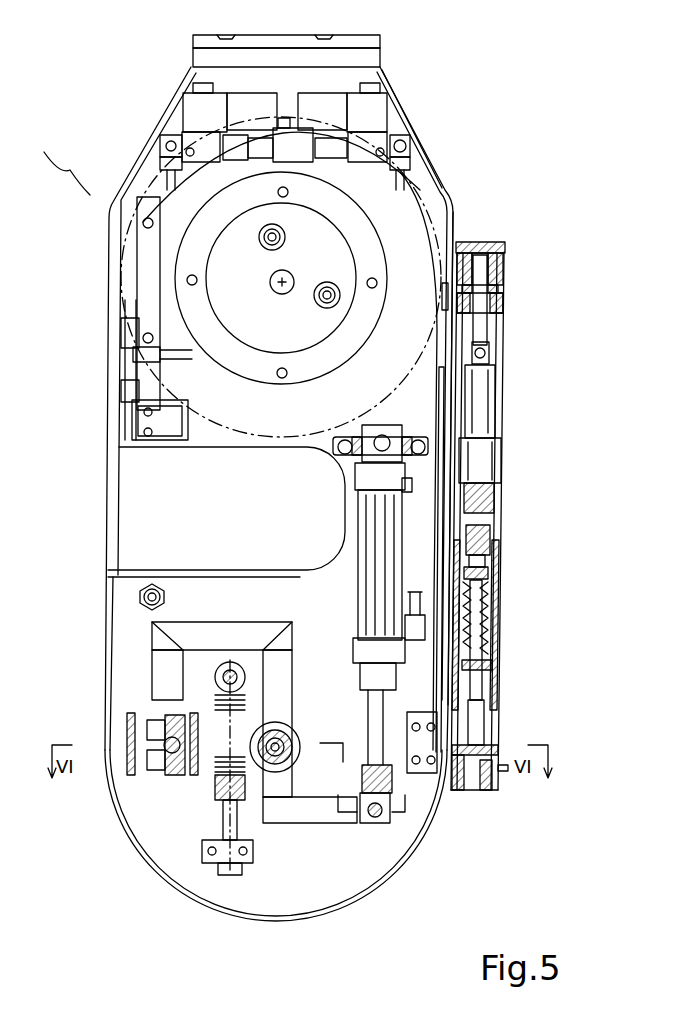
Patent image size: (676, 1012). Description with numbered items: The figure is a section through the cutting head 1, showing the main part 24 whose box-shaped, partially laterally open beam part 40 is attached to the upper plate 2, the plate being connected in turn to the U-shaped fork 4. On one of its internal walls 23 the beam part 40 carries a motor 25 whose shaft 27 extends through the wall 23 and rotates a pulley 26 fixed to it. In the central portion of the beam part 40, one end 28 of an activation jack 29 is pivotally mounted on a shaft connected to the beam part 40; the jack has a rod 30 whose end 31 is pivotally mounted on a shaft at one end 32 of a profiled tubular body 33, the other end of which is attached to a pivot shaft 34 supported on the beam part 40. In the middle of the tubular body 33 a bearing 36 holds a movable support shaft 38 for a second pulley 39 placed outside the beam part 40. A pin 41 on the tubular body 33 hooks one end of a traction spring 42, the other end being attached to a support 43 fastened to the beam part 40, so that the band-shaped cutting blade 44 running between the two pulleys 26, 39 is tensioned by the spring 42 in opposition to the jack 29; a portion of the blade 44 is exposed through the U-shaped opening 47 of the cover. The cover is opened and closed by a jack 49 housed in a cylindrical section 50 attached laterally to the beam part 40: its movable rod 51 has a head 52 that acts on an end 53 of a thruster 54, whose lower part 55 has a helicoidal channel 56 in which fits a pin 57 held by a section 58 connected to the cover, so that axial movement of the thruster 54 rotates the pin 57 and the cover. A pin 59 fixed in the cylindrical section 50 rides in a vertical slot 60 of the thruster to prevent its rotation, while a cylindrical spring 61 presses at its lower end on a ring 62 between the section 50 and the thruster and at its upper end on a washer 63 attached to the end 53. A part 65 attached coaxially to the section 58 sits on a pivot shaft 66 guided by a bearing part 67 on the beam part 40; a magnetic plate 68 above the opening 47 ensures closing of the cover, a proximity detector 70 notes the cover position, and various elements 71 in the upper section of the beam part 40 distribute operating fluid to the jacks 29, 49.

The cutting head 1 is at (56, 157).
The upper plate 2 is at (372, 62).
The U-shaped fork 4 is at (375, 45).
The internal wall 23 is at (136, 617).
The main part 24 is at (440, 152).
The motor 25 is at (220, 268).
The pulley 26 is at (215, 438).
The shaft 27 is at (277, 292).
The end of activation jack 28 is at (360, 452).
The activation jack 29 is at (378, 520).
The rod 30 is at (380, 752).
The end of rod 31 is at (390, 800).
The end of profiled tubular body 32 is at (376, 815).
The profiled tubular body 33 is at (281, 830).
The pivot shaft 34 is at (145, 742).
The bearing 36 is at (292, 735).
The movable support shaft 38 is at (284, 745).
The pulley 39 is at (172, 790).
The beam part 40 is at (450, 192).
The pin 41 is at (232, 668).
The traction spring 42 is at (220, 770).
The support 43 is at (215, 852).
The cutting blade 44 is at (108, 575).
The U-shaped opening 47 is at (162, 500).
The jack 49 is at (480, 410).
The cylindrical section 50 is at (502, 434).
The movable rod 51 is at (478, 540).
The head 52 is at (483, 562).
The end of thruster 53 is at (490, 574).
The thruster 54 is at (476, 618).
The lower part of thruster 55 is at (474, 780).
The helicoidal channel 56 is at (494, 778).
The pin 57 is at (484, 790).
The section 58 is at (492, 742).
The pin 59 is at (490, 672).
The vertical slot 60 is at (482, 655).
The cylindrical spring 61 is at (480, 600).
The ring 62 is at (486, 706).
The washer 63 is at (440, 588).
The part 65 is at (500, 270).
The pivot shaft 66 is at (500, 290).
The bearing part 67 is at (500, 304).
The magnetic plate 68 is at (170, 445).
The proximity detector 70 is at (152, 588).
The elements 71 is at (388, 120).